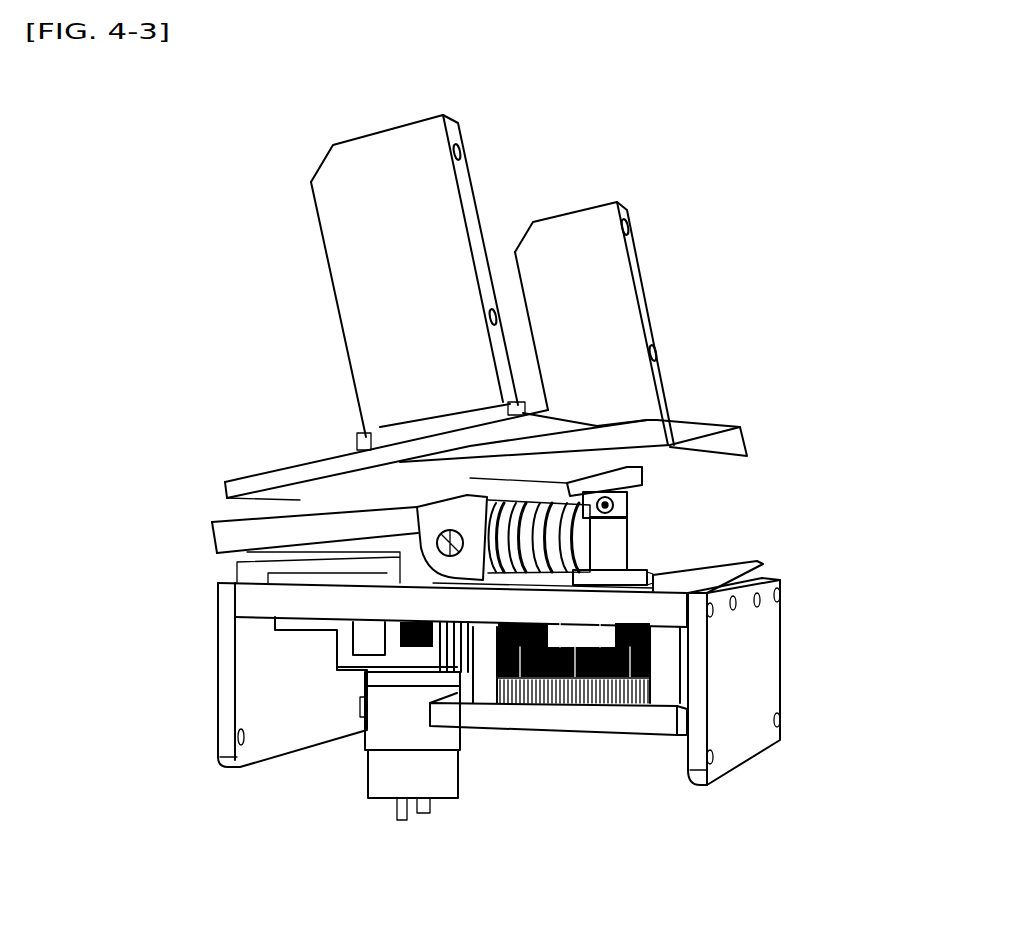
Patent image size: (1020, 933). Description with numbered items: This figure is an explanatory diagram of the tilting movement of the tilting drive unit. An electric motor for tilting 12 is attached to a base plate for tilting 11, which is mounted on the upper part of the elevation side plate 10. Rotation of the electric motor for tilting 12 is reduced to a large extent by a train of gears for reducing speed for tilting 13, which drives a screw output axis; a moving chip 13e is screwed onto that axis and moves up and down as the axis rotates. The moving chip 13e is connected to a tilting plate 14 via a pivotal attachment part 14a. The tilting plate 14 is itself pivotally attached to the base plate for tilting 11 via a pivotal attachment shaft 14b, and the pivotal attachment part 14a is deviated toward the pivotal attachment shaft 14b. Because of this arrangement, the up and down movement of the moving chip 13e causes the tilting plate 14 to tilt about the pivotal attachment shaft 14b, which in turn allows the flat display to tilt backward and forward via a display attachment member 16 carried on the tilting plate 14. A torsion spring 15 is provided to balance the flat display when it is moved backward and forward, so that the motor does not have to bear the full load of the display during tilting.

The elevation side plate 10 is at (224, 648).
The base plate for tilting 11 is at (610, 613).
The electric motor for tilting 12 is at (397, 725).
The train of gears for reducing speed for tilting 13 is at (543, 740).
The moving chip 13e is at (608, 547).
The tilting plate 14 is at (273, 523).
The pivotal attachment part 14a is at (667, 428).
The pivotal attachment shaft 14b is at (440, 537).
The torsion spring 15 is at (500, 497).
The display attachment member 16 is at (686, 235).